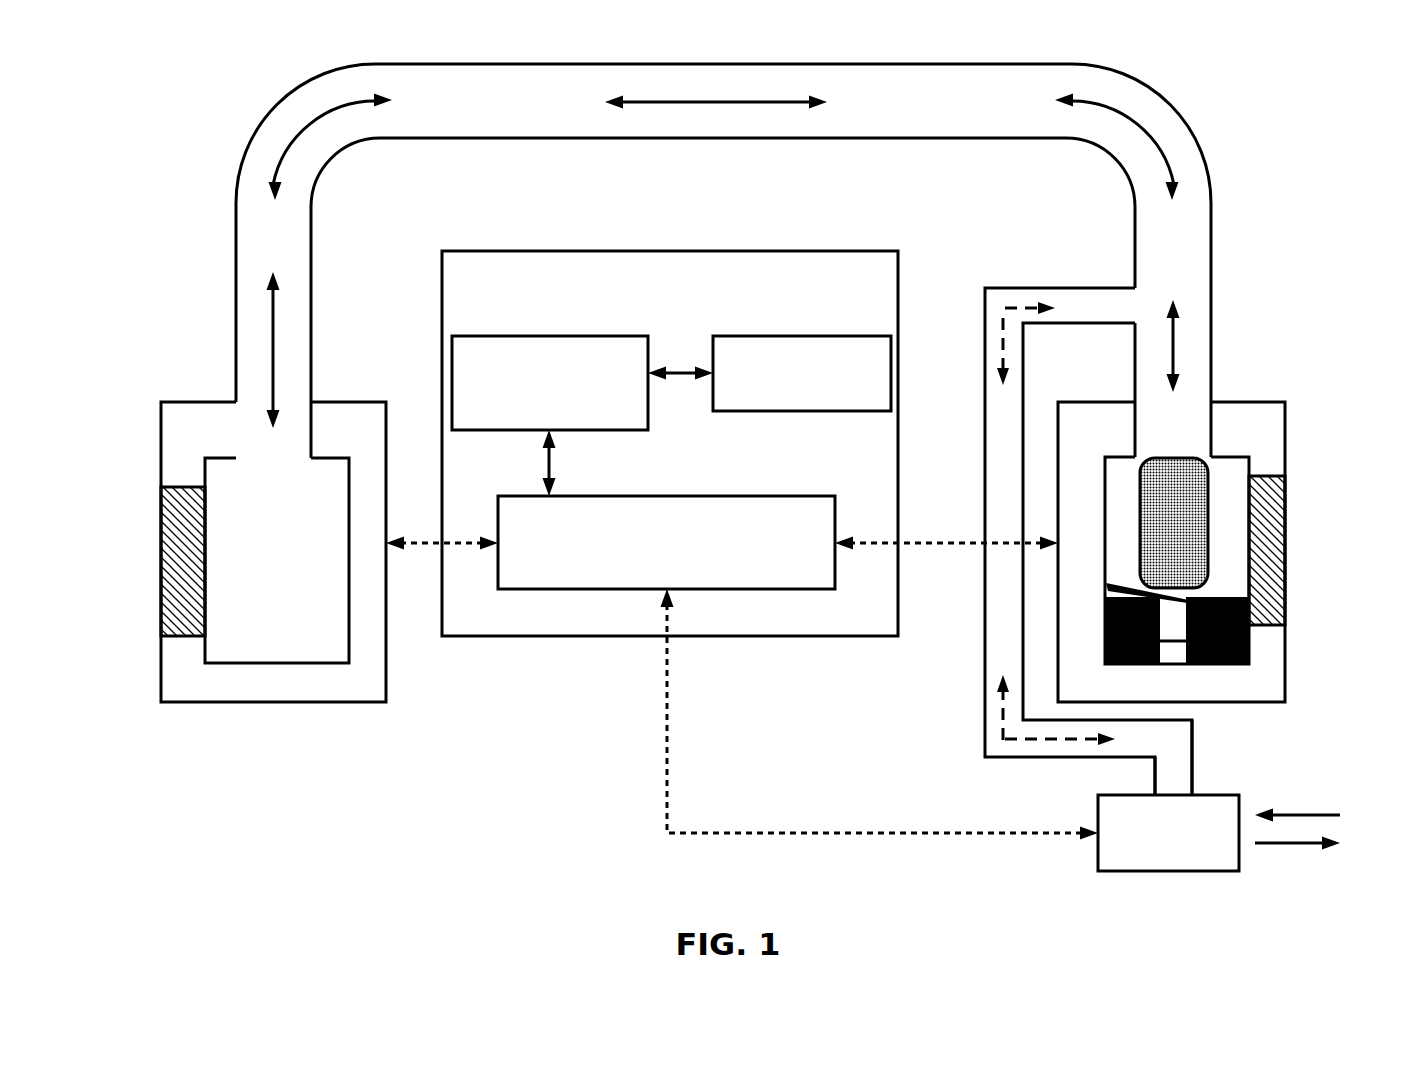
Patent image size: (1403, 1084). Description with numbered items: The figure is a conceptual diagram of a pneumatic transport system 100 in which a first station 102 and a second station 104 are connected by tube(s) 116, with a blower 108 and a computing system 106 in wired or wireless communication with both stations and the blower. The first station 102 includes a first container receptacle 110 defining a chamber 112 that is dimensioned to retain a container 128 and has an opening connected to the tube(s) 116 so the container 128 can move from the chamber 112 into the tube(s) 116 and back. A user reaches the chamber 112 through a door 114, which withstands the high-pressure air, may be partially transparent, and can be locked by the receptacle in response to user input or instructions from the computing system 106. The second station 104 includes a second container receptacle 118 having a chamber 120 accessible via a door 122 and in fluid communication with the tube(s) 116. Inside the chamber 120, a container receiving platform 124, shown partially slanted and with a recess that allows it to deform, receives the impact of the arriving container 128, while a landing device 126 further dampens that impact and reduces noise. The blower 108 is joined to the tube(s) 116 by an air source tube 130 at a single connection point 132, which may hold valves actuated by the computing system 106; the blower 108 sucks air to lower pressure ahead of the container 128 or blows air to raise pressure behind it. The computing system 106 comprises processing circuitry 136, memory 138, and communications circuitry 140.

The pneumatic transport system 100 is at (168, 72).
The first station 102 is at (150, 343).
The second station 104 is at (1318, 330).
The computing system 106 is at (647, 316).
The blower 108 is at (1148, 859).
The first container receptacle 110 is at (161, 414).
The chamber 112 is at (263, 663).
The door 114 is at (161, 550).
The tube(s) 116 is at (622, 138).
The second container receptacle 118 is at (1268, 402).
The chamber 120 is at (1230, 455).
The door 122 is at (1290, 481).
The container receiving platform 124 is at (1249, 652).
The landing device 126 is at (1232, 612).
The container 128 is at (1208, 522).
The air source tube 130 is at (1192, 760).
The connection point 132 is at (1123, 290).
The processing circuitry 136 is at (529, 424).
The memory 138 is at (781, 401).
The communications circuitry 140 is at (646, 584).